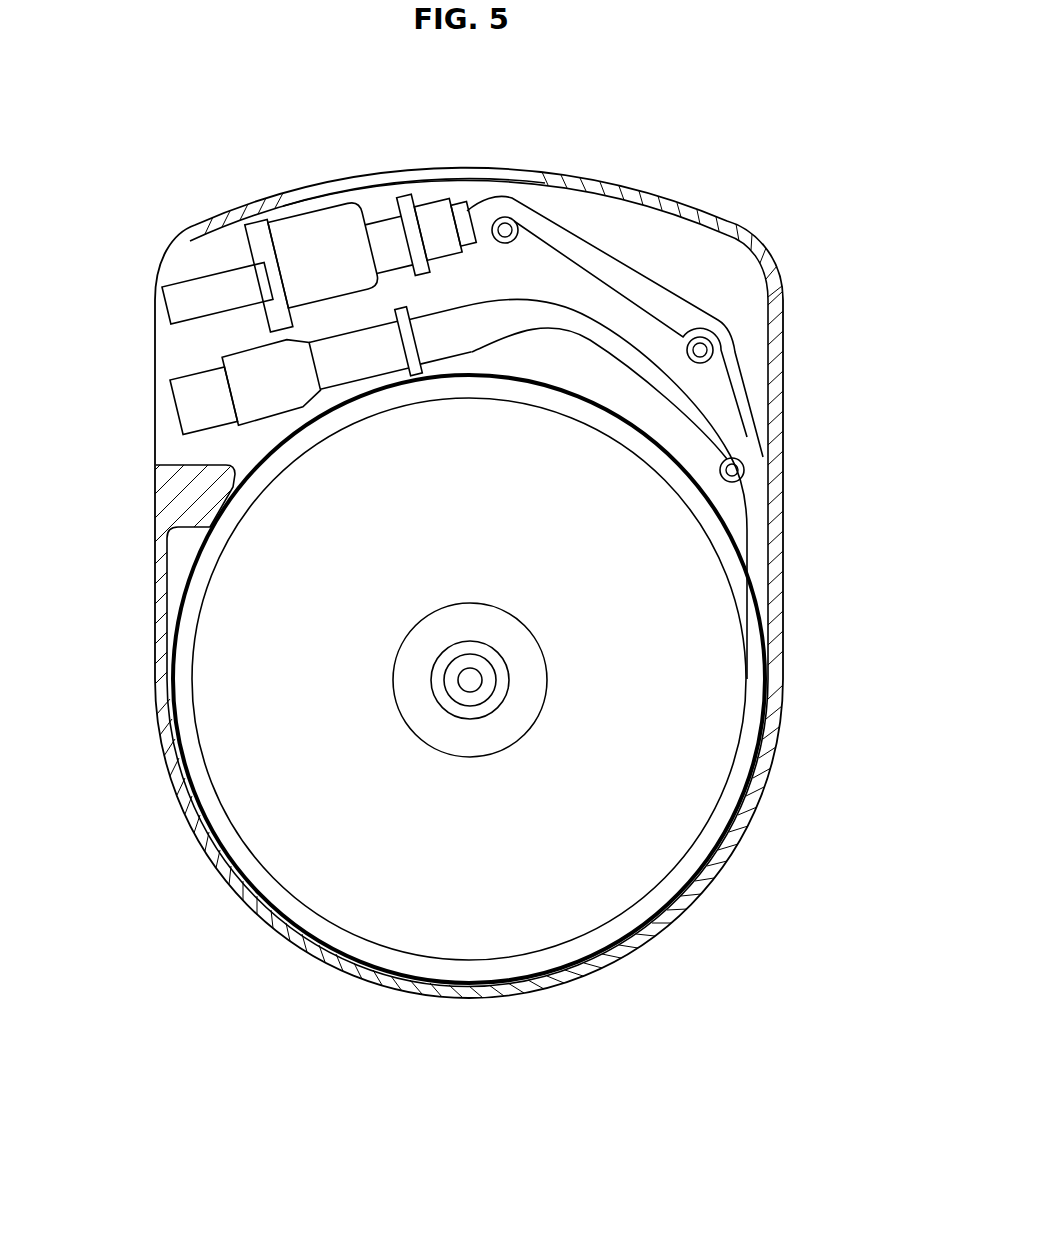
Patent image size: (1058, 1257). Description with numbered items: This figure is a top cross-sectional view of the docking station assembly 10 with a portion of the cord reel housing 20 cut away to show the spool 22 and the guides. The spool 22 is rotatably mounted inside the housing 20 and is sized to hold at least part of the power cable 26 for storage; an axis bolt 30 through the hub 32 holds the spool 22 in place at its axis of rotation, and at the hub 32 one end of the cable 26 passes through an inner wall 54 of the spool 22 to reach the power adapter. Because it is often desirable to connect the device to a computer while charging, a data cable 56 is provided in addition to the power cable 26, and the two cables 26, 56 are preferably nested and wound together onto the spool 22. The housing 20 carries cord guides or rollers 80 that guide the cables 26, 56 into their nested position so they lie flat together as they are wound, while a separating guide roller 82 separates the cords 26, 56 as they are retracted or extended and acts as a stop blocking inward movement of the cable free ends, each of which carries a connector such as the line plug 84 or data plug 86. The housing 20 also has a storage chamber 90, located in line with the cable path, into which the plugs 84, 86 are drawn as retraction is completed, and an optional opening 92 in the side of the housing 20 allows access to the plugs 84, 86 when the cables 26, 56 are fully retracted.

The docking station assembly 10 is at (690, 975).
The cord reel housing 20 is at (776, 568).
The spool 22 is at (706, 750).
The power cable 26 is at (612, 268).
The axis bolt 30 is at (470, 688).
The hub 32 is at (524, 688).
The inner wall 54 is at (405, 715).
The data cable 56 is at (713, 425).
The cord guide 80 is at (738, 468).
The separating guide roller 82 is at (507, 228).
The line plug 84 is at (308, 253).
The data plug 86 is at (255, 390).
The storage chamber 90 is at (372, 205).
The opening 92 is at (462, 174).